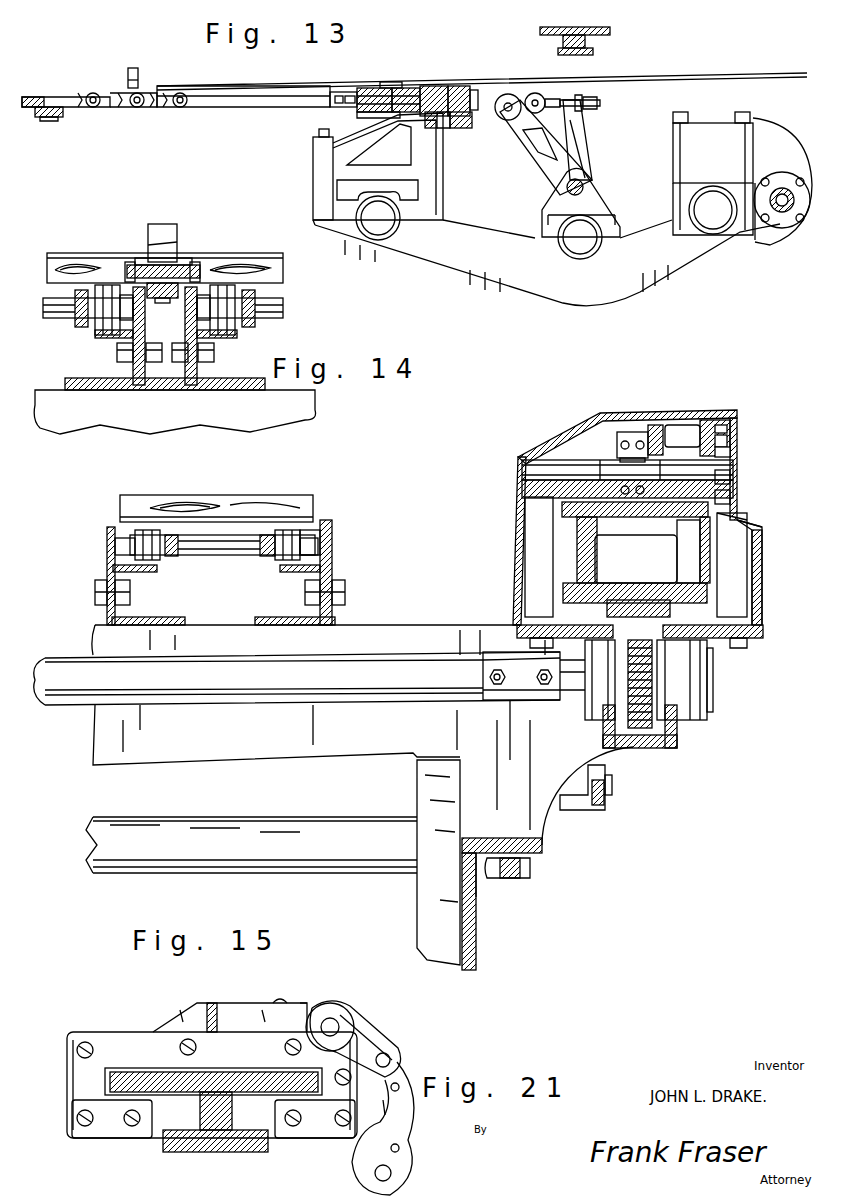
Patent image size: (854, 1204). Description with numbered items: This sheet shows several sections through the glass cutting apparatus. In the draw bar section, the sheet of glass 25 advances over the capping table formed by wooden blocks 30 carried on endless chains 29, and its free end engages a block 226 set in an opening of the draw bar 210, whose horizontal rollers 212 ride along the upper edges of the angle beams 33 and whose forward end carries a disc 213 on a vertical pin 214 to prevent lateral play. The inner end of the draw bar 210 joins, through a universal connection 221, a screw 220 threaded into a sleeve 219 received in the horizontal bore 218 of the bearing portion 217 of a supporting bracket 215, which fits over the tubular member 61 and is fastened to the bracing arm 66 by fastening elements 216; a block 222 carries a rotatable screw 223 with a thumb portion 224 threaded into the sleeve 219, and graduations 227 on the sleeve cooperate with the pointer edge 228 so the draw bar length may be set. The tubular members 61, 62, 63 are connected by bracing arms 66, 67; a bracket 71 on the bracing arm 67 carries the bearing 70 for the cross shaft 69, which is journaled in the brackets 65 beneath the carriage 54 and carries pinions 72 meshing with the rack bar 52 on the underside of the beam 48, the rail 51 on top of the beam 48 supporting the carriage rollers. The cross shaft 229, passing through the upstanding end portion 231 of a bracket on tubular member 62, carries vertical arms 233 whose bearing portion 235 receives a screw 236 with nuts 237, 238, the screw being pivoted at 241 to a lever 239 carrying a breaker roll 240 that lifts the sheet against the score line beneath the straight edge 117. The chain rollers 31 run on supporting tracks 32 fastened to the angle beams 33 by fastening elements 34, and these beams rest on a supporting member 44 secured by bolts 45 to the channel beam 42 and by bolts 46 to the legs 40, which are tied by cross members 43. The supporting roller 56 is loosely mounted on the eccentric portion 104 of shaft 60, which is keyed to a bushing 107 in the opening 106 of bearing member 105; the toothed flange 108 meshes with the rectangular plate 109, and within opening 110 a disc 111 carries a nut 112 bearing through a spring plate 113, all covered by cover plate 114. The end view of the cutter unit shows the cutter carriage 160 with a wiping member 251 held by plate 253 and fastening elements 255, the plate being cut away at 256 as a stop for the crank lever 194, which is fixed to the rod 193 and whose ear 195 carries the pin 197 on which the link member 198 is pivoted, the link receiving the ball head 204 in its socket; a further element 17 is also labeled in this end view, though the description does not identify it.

In FIG. 13, the sheet of glass 25 is at (250, 85).
In FIG. 13, the draw bar 210 is at (245, 100).
In FIG. 13, the vertical pin 214 is at (47, 95).
In FIG. 13, the disc 213 is at (38, 118).
In FIG. 14, the disc 213 is at (165, 272).
In FIG. 13, the horizontal rollers 212 is at (137, 108).
In FIG. 14, the horizontal rollers 212 is at (147, 250).
In FIG. 13, the block 226 is at (138, 70).
In FIG. 13, the universal connection 221 is at (348, 93).
In FIG. 13, the sleeve 219 is at (392, 88).
In FIG. 13, the edge 228 is at (398, 82).
In FIG. 13, the screw 223 is at (410, 88).
In FIG. 13, the block 222 is at (440, 86).
In FIG. 13, the thumb portion 224 is at (470, 92).
In FIG. 13, the bearing portion 217 is at (458, 128).
In FIG. 13, the screw 220 is at (372, 112).
In FIG. 13, the supporting bracket 215 is at (322, 165).
In FIG. 13, the fastening elements 216 is at (318, 132).
In FIG. 13, the horizontal bore 218 is at (377, 162).
In FIG. 13, the tubular member 61 is at (378, 240).
In FIG. 13, the bracing arm 66 is at (465, 265).
In FIG. 13, the bracing arm 67 is at (680, 263).
In FIG. 13, the upstanding end portion 231 is at (556, 210).
In FIG. 13, the tubular member 62 is at (560, 248).
In FIG. 13, the cross shaft 229 is at (585, 188).
In FIG. 13, the lever 239 is at (525, 143).
In FIG. 13, the breaker roll 240 is at (500, 116).
In FIG. 13, the nut 237 is at (555, 100).
In FIG. 13, the screw 236 is at (545, 96).
In FIG. 13, the nut 238 is at (600, 102).
In FIG. 13, the bearing portion 235 is at (585, 96).
In FIG. 13, the pivot 241 is at (590, 128).
In FIG. 13, the vertical arm 233 is at (588, 145).
In FIG. 13, the straight edge 117 is at (587, 27).
In FIG. 13, the bracket 71 is at (748, 125).
In FIG. 13, the tubular member 63 is at (700, 248).
In FIG. 13, the bearing 70 is at (810, 220).
In FIG. 13, the cross shaft 69 is at (762, 228).
In FIG. 15, the cross shaft 69 is at (392, 692).
In FIG. 14, the wooden blocks 30 is at (262, 256).
In FIG. 15, the wooden blocks 30 is at (250, 482).
In FIG. 14, the graduations 227 is at (165, 230).
In FIG. 14, the angle beams 33 is at (182, 337).
In FIG. 15, the angle beams 33 is at (333, 568).
In FIG. 14, the endless chains 29 is at (245, 325).
In FIG. 15, the endless chains 29 is at (252, 557).
In FIG. 14, the supporting member 44 is at (55, 405).
In FIG. 15, the supporting member 44 is at (438, 598).
In FIG. 15, the rollers 31 is at (107, 553).
In FIG. 15, the supporting tracks 32 is at (320, 555).
In FIG. 15, the fastening elements 34 is at (345, 590).
In FIG. 15, the cross members 43 is at (244, 797).
In FIG. 15, the legs 40 is at (428, 880).
In FIG. 15, the channel beam 42 is at (476, 930).
In FIG. 15, the bolts 45 is at (525, 878).
In FIG. 15, the bolts 46 is at (605, 802).
In FIG. 15, the bracket 65 is at (676, 748).
In FIG. 15, the pinion 72 is at (645, 742).
In FIG. 15, the beam 48 is at (575, 540).
In FIG. 15, the shaft 60 is at (600, 425).
In FIG. 15, the eccentric portion 104 is at (630, 432).
In FIG. 15, the supporting roller 56 is at (660, 458).
In FIG. 15, the bearing member 105 is at (685, 425).
In FIG. 15, the opening 106 is at (682, 436).
In FIG. 15, the bushing 107 is at (705, 420).
In FIG. 15, the disc 111 is at (735, 427).
In FIG. 15, the nut 112 is at (737, 440).
In FIG. 15, the rectangular plate 109 is at (740, 452).
In FIG. 15, the spring plate 113 is at (742, 479).
In FIG. 15, the cover plate 114 is at (742, 497).
In FIG. 15, the carriage 54 is at (760, 530).
In FIG. 15, the rail 51 is at (562, 536).
In FIG. 15, the rack bar 52 is at (727, 592).
In FIG. 15, the flange 108 is at (692, 517).
In FIG. 15, the opening 110 is at (716, 548).
In FIG. 21, the plate 253 is at (118, 1042).
In FIG. 21, the cutter carriage 160 is at (262, 984).
In FIG. 21, the frame 17 is at (166, 1100).
In FIG. 21, the wiping member 251 is at (130, 1118).
In FIG. 21, the fastening elements 255 is at (285, 1047).
In FIG. 21, the cut-away corner 256 is at (336, 1083).
In FIG. 21, the rod 193 is at (338, 1020).
In FIG. 21, the crank lever 194 is at (330, 986).
In FIG. 21, the ear 195 is at (360, 1030).
In FIG. 21, the pin 197 is at (390, 1058).
In FIG. 21, the link member 198 is at (410, 1110).
In FIG. 21, the ball head 204 is at (392, 1173).